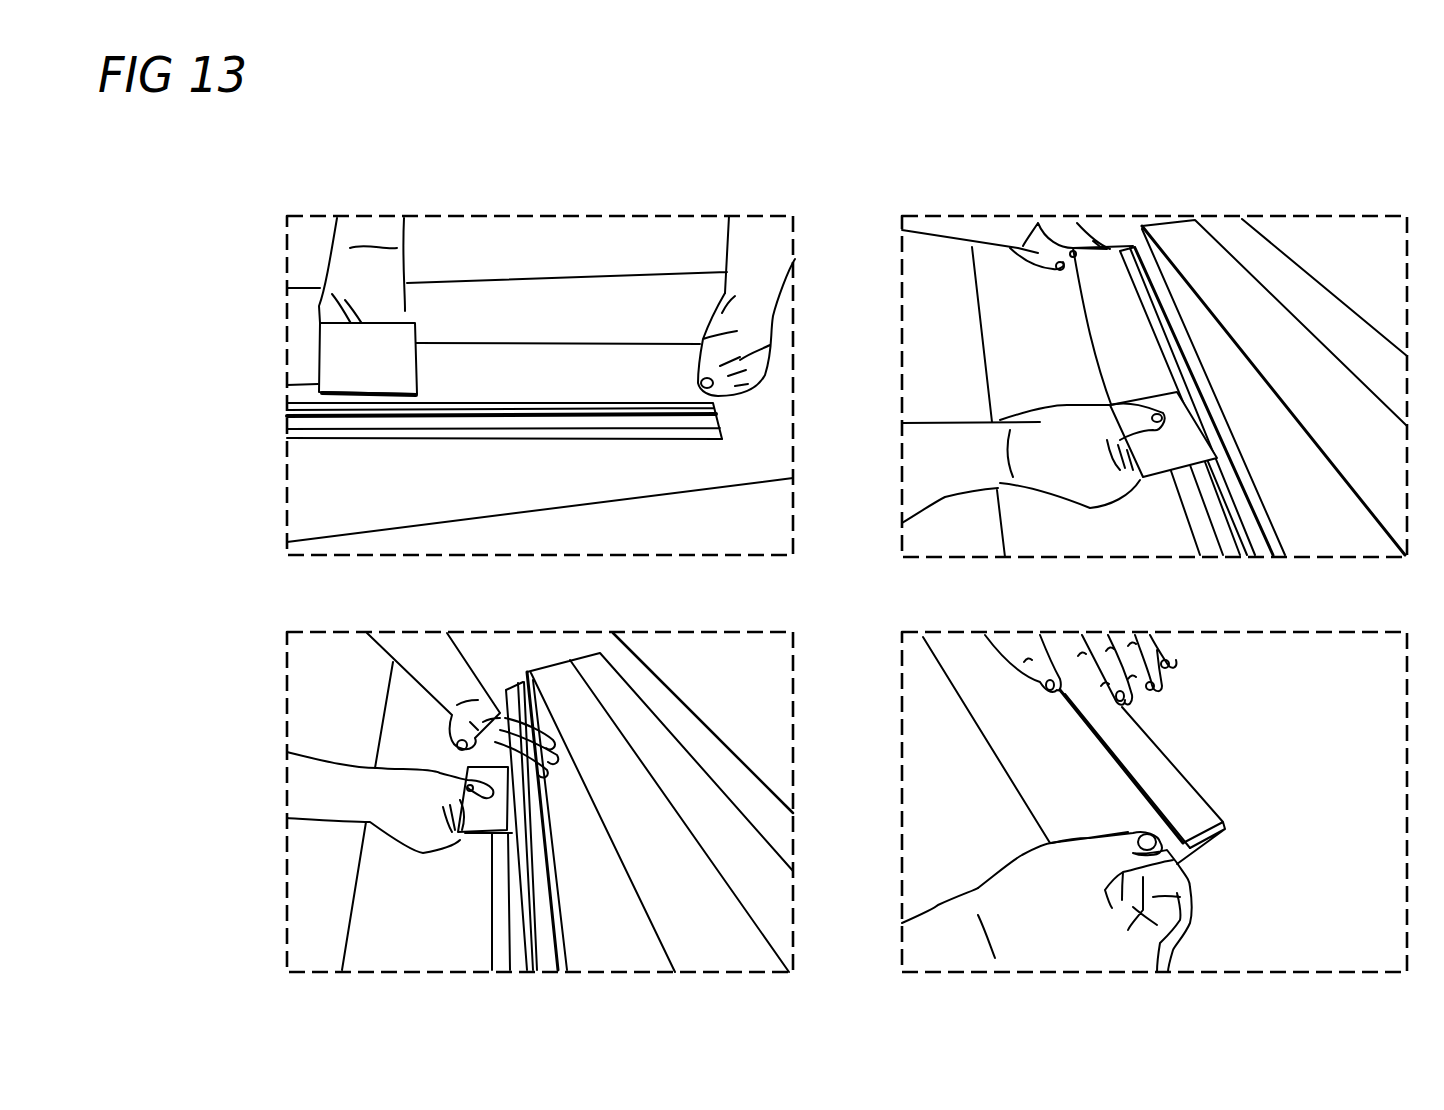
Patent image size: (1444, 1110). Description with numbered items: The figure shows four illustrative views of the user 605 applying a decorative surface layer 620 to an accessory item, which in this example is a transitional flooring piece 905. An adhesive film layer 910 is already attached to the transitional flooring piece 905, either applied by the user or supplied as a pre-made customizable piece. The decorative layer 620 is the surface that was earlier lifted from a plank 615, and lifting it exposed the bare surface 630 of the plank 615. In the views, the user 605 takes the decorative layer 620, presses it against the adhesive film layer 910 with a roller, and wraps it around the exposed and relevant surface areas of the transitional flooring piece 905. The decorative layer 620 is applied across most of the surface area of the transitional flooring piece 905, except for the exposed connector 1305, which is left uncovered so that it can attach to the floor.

The user 605 is at (727, 232).
The plank 615 is at (613, 667).
The decorative layer 620 is at (1081, 787).
The bare surface 630 is at (773, 873).
The transitional flooring piece 905 is at (325, 450).
The adhesive film layer 910 is at (438, 430).
The exposed connector 1305 is at (1238, 732).